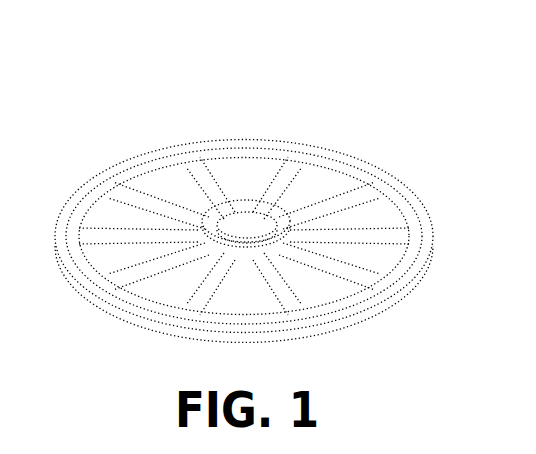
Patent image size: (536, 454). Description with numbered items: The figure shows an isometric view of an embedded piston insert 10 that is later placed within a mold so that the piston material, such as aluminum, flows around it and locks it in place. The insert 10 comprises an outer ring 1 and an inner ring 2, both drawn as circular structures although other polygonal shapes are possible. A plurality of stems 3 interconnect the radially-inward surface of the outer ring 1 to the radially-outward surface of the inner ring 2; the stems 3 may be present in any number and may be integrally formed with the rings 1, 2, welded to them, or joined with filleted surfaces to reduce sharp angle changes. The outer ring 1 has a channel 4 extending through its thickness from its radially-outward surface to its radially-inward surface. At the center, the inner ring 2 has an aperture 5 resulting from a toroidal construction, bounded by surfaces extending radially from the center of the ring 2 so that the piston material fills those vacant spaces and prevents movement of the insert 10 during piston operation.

The embedded piston insert 10 is at (118, 82).
The outer ring 1 is at (157, 146).
The inner ring 2 is at (212, 251).
The stem 3 is at (324, 192).
The channel 4 is at (404, 284).
The aperture 5 is at (247, 226).